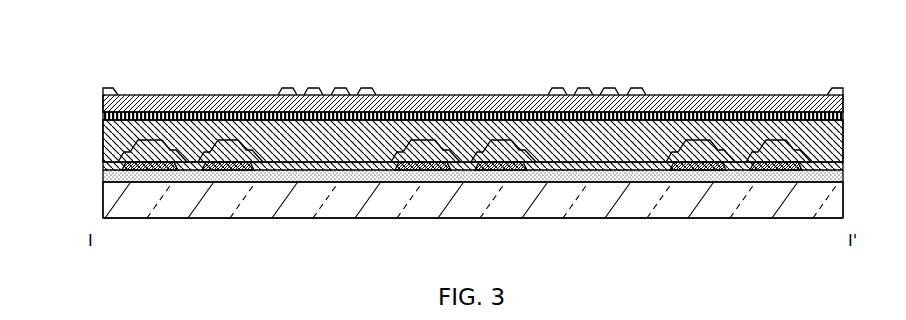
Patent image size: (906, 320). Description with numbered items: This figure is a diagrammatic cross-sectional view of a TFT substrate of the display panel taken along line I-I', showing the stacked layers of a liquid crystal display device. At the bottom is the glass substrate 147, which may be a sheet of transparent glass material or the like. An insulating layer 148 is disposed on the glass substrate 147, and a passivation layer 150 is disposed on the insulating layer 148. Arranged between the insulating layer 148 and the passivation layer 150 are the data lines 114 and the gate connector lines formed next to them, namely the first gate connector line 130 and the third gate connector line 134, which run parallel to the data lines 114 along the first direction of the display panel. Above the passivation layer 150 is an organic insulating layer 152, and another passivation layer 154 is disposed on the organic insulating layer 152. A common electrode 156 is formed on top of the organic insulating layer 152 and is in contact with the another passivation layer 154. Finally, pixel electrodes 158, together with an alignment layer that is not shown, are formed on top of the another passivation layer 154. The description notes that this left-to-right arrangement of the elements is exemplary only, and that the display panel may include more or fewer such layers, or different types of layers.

The data lines 114 is at (233, 167).
The first gate connector line 130 is at (143, 167).
The third gate connector line 134 is at (700, 163).
The glass substrate 147 is at (813, 204).
The insulating layer 148 is at (840, 171).
The passivation layer 150 is at (103, 162).
The organic insulating layer 152 is at (557, 138).
The another passivation layer 154 is at (707, 100).
The common electrode 156 is at (103, 113).
The pixel electrodes 158 is at (340, 88).